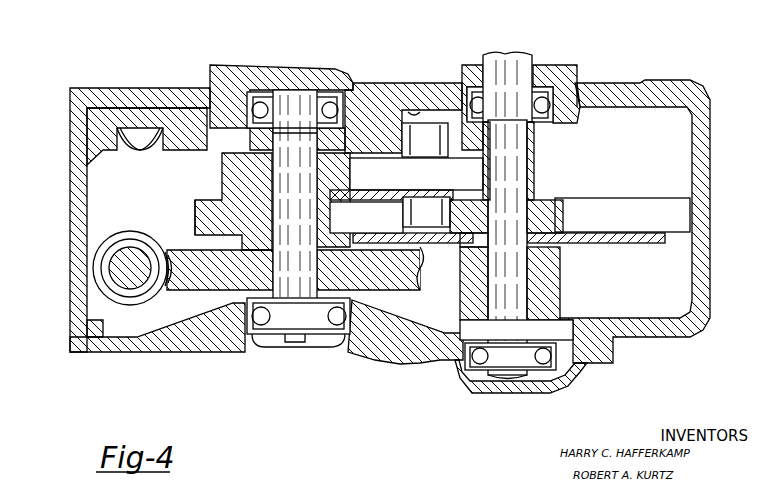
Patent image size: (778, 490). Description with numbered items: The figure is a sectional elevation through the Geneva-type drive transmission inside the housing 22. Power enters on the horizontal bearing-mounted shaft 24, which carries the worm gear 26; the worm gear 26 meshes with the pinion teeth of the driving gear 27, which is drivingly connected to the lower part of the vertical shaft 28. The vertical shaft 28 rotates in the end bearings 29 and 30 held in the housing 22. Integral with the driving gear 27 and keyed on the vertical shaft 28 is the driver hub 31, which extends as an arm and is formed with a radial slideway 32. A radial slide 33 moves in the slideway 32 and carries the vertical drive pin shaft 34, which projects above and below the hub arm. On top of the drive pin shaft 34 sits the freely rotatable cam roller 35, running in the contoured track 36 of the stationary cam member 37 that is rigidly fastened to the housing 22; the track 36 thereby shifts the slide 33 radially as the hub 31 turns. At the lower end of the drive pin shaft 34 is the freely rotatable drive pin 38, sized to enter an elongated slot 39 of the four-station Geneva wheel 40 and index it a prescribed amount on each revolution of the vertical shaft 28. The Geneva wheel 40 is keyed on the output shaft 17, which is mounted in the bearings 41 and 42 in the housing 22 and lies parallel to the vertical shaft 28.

The output shaft 17 is at (520, 52).
The housing 22 is at (124, 86).
The bearing-mounted shaft 24 is at (133, 247).
The worm gear 26 is at (126, 232).
The driving gear 27 is at (412, 283).
The vertical shaft 28 is at (280, 170).
The end bearing 29 is at (341, 82).
The end bearing 30 is at (345, 322).
The driver hub 31 is at (222, 162).
The slideway 32 is at (398, 150).
The radial slide 33 is at (472, 175).
The drive pin shaft 34 is at (458, 165).
The cam roller 35 is at (416, 147).
The contoured track 36 is at (145, 151).
The stationary cam member 37 is at (186, 100).
The drive pin 38 is at (416, 215).
The elongated slot 39 is at (349, 225).
The Geneva wheel 40 is at (555, 198).
The bearing 41 is at (195, 210).
The bearing 42 is at (557, 362).